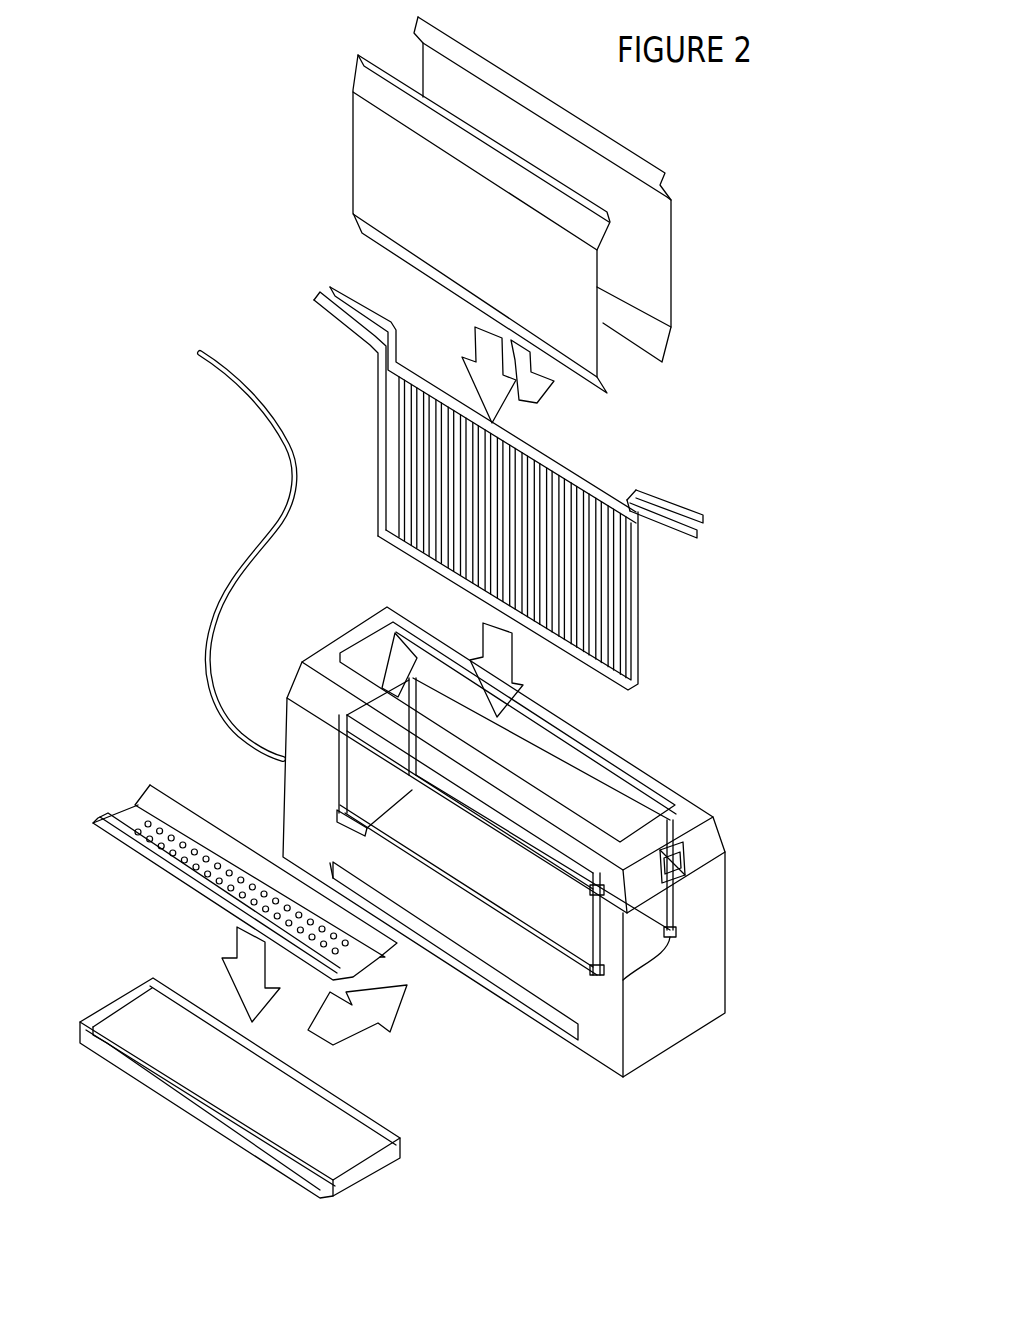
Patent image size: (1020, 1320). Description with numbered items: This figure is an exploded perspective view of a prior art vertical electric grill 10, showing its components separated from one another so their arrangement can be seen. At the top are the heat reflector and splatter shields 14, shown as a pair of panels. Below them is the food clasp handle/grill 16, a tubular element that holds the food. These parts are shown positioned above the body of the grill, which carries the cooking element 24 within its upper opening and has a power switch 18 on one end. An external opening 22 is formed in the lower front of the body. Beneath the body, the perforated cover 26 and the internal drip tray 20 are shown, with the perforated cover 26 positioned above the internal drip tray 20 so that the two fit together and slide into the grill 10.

The vertical electric grill 10 is at (230, 277).
The heat reflector and splatter shields 14 is at (383, 183).
The food clasp handle/grill 16 is at (580, 483).
The power switch 18 is at (685, 850).
The internal drip tray 20 is at (153, 1028).
The external opening 22 is at (545, 1022).
The cooking element 24 is at (598, 793).
The perforated cover 26 is at (177, 822).